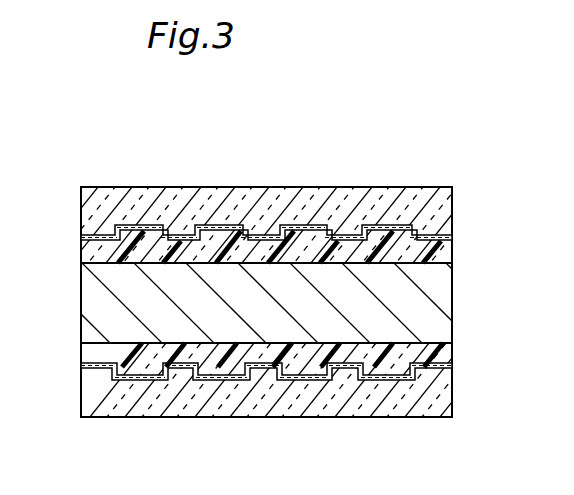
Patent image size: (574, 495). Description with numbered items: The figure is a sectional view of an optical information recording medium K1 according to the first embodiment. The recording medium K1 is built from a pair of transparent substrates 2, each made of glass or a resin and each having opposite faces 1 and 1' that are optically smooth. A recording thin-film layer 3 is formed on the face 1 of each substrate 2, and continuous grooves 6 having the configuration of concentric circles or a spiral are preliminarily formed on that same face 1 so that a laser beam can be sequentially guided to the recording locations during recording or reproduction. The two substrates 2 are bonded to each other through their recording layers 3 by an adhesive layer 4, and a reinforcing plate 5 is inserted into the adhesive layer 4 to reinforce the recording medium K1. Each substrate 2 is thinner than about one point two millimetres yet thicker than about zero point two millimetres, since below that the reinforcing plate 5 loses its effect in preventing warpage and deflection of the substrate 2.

The optical information recording medium K1 is at (300, 78).
The face 1 is at (237, 302).
The face 1' is at (266, 300).
The transparent substrate 2 is at (380, 204).
The recording thin-film layer 3 is at (292, 225).
The adhesive layer 4 is at (442, 352).
The reinforcing plate 5 is at (412, 302).
The continuous grooves 6 is at (178, 382).